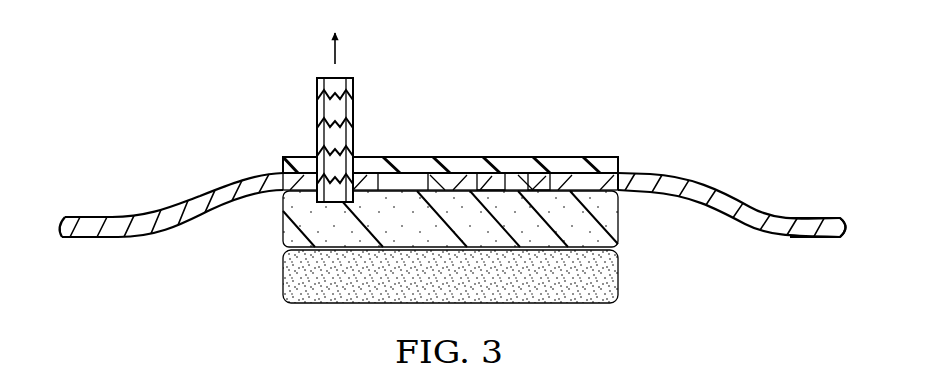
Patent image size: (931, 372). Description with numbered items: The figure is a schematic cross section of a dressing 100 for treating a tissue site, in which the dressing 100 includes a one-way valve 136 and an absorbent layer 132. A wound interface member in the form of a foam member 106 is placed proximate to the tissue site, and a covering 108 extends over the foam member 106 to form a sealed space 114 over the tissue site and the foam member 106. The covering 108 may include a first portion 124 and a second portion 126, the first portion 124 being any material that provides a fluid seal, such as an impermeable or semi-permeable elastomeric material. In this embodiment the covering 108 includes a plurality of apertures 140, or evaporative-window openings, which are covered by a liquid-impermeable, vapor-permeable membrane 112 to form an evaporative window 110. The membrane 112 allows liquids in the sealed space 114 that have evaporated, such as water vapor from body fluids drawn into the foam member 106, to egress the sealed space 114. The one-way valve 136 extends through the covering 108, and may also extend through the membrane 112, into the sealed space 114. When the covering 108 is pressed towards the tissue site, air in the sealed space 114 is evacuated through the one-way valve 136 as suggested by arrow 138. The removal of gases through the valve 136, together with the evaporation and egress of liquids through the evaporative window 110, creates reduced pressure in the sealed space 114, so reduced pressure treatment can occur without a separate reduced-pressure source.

The dressing 100 is at (247, 72).
The foam member 106 is at (471, 290).
The covering 108 is at (694, 177).
The evaporative window 110 is at (401, 150).
The liquid-impermeable, vapor-permeable membrane 112 is at (610, 150).
The sealed space 114 is at (563, 274).
The first portion 124 is at (769, 213).
The second portion 126 is at (562, 172).
The absorbent layer 132 is at (471, 232).
The one-way valve 136 is at (354, 109).
The arrow 138 is at (337, 50).
The apertures 140 is at (484, 178).